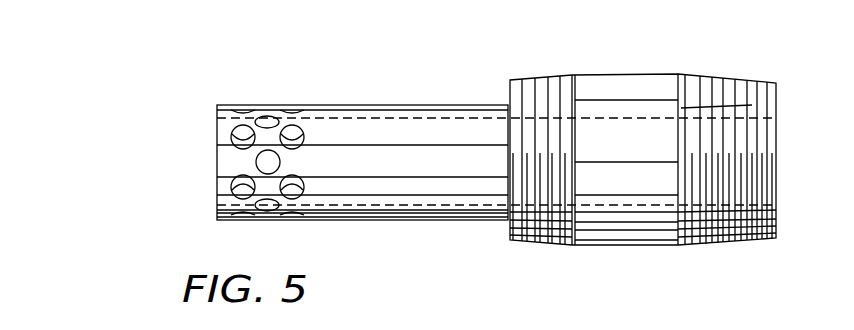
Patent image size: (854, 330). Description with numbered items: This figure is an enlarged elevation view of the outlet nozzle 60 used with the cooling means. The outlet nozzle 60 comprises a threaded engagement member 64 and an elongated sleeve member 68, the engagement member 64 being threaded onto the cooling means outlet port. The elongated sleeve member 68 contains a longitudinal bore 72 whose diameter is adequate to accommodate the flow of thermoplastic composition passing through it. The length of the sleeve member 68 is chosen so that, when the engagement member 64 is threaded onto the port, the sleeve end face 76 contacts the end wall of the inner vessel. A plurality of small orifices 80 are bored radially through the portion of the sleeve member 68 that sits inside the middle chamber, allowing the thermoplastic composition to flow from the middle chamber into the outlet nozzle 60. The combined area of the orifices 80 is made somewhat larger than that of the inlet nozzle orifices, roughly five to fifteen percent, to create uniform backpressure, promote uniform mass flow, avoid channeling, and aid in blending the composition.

The outlet nozzle 60 is at (643, 131).
The threaded engagement member 64 is at (682, 108).
The elongated sleeve member 68 is at (403, 105).
The longitudinal bore 72 is at (383, 168).
The sleeve end face 76 is at (217, 135).
The orifices 80 is at (236, 188).